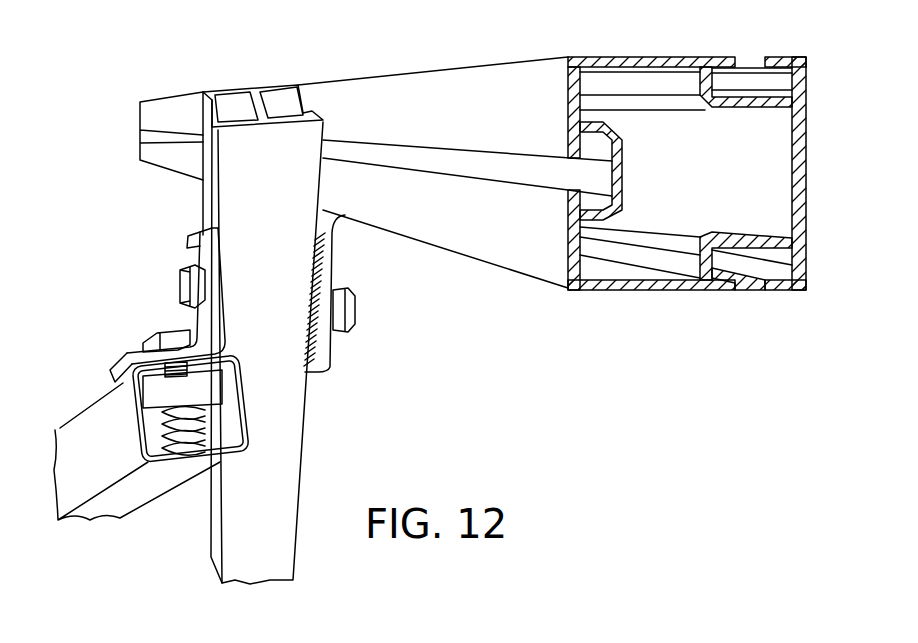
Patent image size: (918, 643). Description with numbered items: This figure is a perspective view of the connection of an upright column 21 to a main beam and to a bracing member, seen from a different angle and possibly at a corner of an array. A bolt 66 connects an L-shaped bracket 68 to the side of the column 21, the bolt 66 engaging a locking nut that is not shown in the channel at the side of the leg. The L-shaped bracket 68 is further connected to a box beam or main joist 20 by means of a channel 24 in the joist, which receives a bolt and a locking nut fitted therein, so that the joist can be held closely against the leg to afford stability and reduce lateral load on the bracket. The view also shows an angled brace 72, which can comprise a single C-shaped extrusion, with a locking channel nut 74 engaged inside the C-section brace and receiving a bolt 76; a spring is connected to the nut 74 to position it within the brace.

The main joist 20 is at (500, 242).
The channel 24 is at (460, 165).
The column 21 is at (282, 405).
The bolt 66 is at (353, 307).
The L-shaped bracket 68 is at (335, 352).
The angled brace 72 is at (65, 427).
The locking channel nut 74 is at (160, 392).
The bolt 76 is at (143, 336).